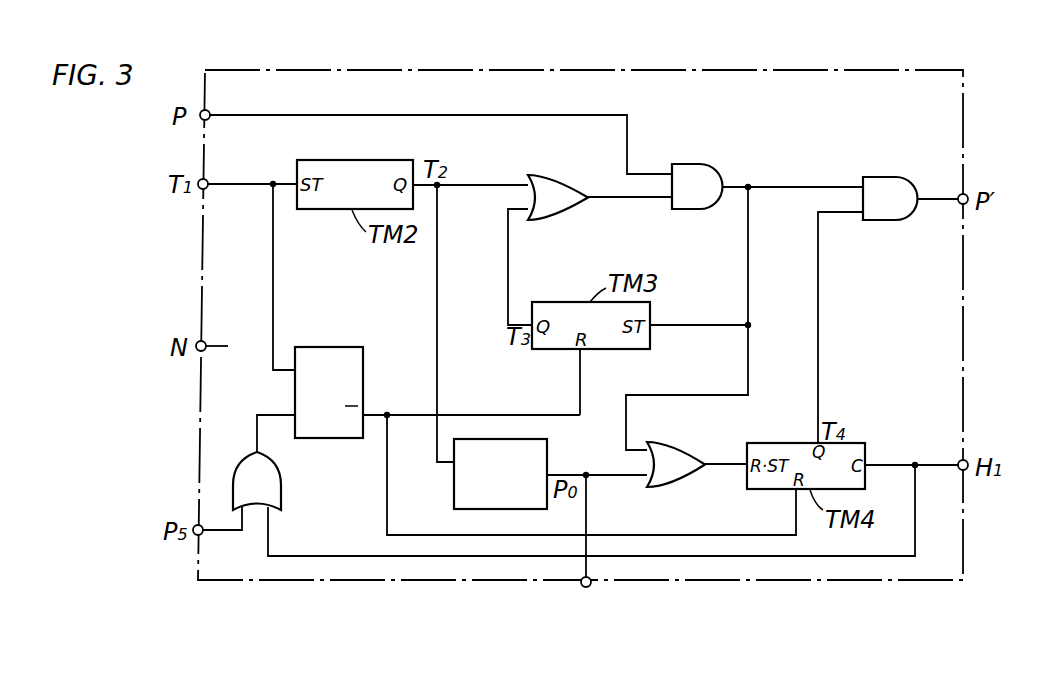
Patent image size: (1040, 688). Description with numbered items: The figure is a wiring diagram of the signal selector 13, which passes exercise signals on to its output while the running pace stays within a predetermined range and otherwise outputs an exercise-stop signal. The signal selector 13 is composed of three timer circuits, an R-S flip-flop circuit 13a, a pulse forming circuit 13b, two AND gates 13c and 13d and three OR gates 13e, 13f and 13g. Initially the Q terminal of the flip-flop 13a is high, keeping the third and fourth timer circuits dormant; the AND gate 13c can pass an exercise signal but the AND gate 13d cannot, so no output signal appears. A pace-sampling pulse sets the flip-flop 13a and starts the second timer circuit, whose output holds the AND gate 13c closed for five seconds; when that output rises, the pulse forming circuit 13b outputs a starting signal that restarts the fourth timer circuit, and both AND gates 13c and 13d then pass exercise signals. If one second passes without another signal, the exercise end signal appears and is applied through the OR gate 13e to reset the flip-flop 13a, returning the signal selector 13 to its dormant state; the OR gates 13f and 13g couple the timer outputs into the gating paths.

The signal selector 13 is at (782, 77).
The R-S flip-flop circuit 13a is at (333, 347).
The pulse forming circuit 13b is at (527, 440).
The AND gate 13c is at (700, 165).
The AND gate 13d is at (888, 177).
The OR gate 13e is at (281, 471).
The OR gate 13f is at (555, 175).
The OR gate 13g is at (672, 450).